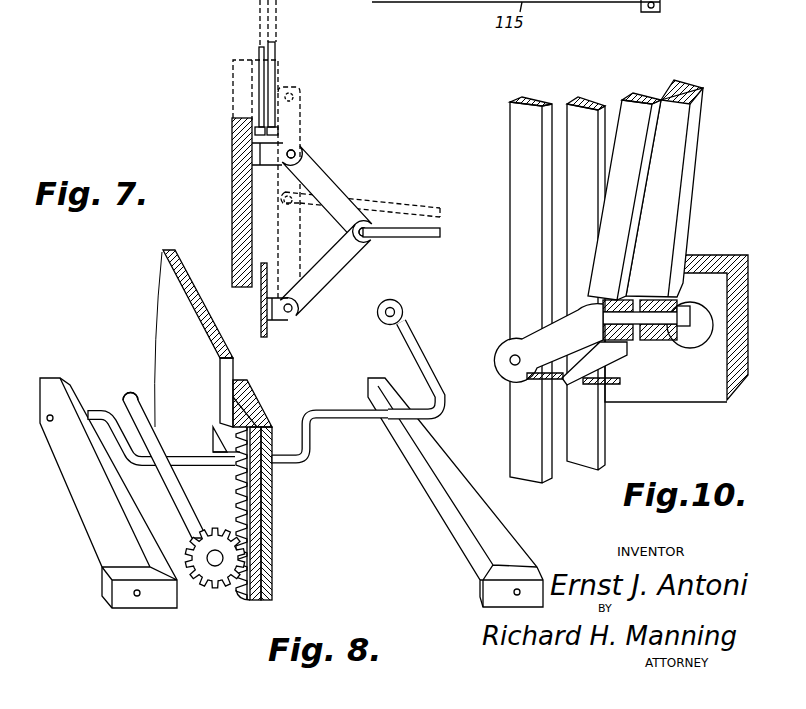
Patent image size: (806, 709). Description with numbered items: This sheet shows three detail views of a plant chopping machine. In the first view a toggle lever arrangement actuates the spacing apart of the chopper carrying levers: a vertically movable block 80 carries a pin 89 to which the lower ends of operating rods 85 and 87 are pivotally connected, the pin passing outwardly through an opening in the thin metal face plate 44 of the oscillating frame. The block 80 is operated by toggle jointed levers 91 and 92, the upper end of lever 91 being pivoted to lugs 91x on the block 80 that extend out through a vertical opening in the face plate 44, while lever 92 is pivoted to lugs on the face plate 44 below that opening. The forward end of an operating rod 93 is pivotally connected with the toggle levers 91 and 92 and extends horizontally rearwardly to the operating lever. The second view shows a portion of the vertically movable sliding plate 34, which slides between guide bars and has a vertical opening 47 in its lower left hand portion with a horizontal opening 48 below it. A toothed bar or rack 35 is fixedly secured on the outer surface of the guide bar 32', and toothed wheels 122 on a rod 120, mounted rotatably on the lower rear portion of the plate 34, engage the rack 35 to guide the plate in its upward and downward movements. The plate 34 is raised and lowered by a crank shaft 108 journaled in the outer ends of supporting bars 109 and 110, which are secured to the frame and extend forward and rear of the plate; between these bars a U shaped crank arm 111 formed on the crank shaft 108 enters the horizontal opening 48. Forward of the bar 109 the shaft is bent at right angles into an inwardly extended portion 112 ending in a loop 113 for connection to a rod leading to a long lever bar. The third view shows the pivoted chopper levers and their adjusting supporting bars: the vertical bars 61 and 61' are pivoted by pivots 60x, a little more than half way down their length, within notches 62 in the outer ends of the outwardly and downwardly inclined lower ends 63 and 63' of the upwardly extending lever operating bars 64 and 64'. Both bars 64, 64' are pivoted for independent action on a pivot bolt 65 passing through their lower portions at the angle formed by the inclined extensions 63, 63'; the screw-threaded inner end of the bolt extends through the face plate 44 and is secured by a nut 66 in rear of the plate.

In FIG. 7, the vertically movable block 80 is at (233, 178).
In FIG. 7, the operating rod 85 is at (277, 53).
In FIG. 7, the operating rod 87 is at (261, 54).
In FIG. 7, the pin 89 is at (253, 132).
In FIG. 7, the toggle jointed lever 91 is at (330, 190).
In FIG. 7, the lugs 91x is at (282, 150).
In FIG. 7, the toggle jointed lever 92 is at (322, 281).
In FIG. 7, the operating rod 93 is at (427, 237).
In FIG. 7, the face plate 44 is at (265, 333).
In FIG. 10, the face plate 44 is at (705, 283).
In FIG. 8, the vertically movable plate 34 is at (165, 280).
In FIG. 8, the vertical opening 47 is at (227, 385).
In FIG. 8, the toothed bar or rack 35 is at (258, 418).
In FIG. 8, the guide bar 32' is at (271, 513).
In FIG. 8, the horizontal opening 48 is at (213, 435).
In FIG. 8, the supporting bar 110 is at (123, 545).
In FIG. 8, the U shaped crank arm 111 is at (185, 491).
In FIG. 8, the rod 120 is at (130, 398).
In FIG. 8, the toothed wheel 122 is at (215, 575).
In FIG. 8, the supporting bar 109 is at (460, 518).
In FIG. 8, the crank shaft 108 is at (343, 418).
In FIG. 8, the inwardly extended portion 112 is at (422, 362).
In FIG. 8, the loop 113 is at (403, 318).
In FIG. 10, the vertical lever or bar 61 is at (514, 283).
In FIG. 10, the vertical lever or bar 61' is at (586, 266).
In FIG. 10, the lever operating bar 64 is at (624, 179).
In FIG. 10, the lever operating bar 64' is at (683, 188).
In FIG. 10, the pivot bolt 65 is at (655, 340).
In FIG. 10, the nut 66 is at (675, 330).
In FIG. 10, the outwardly and downwardly inclined lower end 63 is at (544, 342).
In FIG. 10, the outwardly and downwardly inclined lower end 63' is at (614, 397).
In FIG. 10, the notch 62 is at (542, 380).
In FIG. 10, the pivot 60x is at (511, 363).